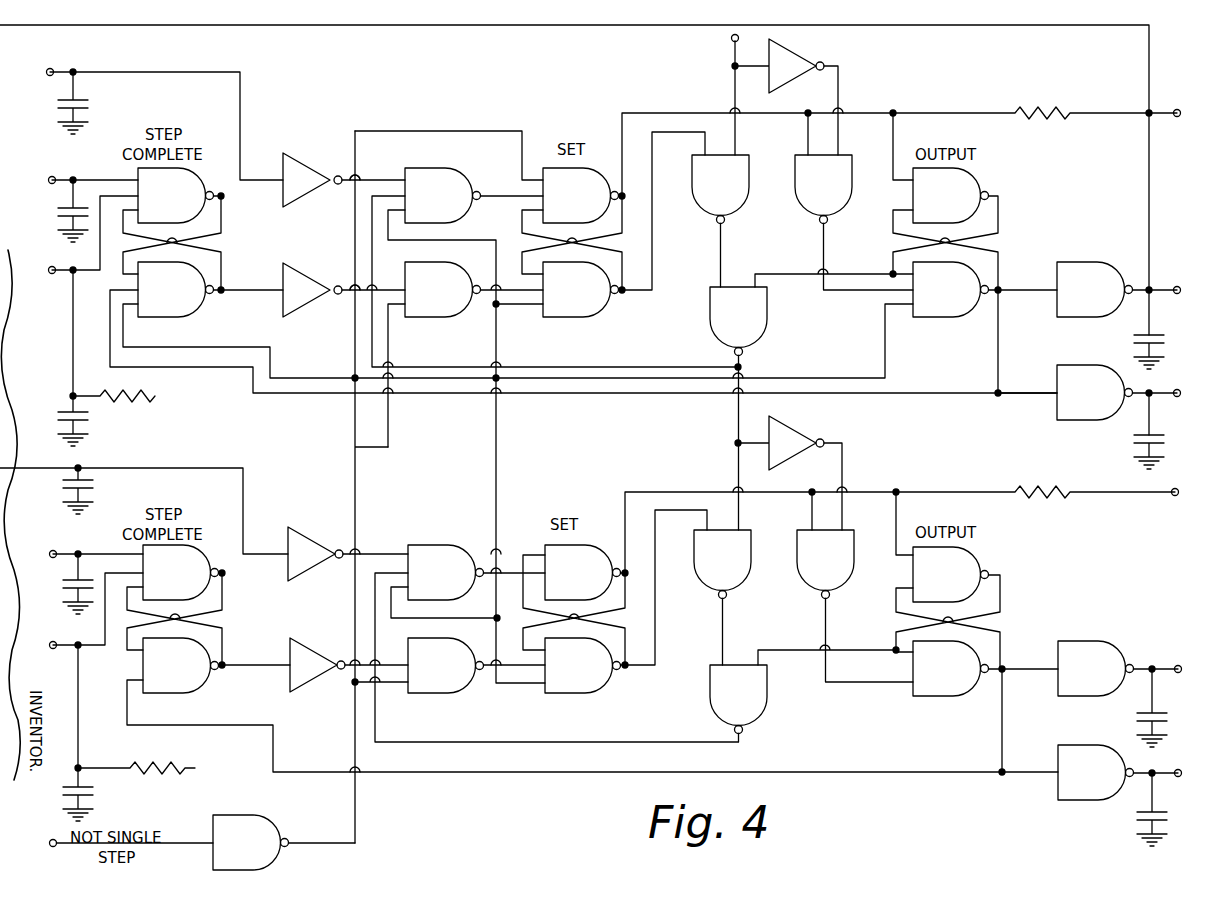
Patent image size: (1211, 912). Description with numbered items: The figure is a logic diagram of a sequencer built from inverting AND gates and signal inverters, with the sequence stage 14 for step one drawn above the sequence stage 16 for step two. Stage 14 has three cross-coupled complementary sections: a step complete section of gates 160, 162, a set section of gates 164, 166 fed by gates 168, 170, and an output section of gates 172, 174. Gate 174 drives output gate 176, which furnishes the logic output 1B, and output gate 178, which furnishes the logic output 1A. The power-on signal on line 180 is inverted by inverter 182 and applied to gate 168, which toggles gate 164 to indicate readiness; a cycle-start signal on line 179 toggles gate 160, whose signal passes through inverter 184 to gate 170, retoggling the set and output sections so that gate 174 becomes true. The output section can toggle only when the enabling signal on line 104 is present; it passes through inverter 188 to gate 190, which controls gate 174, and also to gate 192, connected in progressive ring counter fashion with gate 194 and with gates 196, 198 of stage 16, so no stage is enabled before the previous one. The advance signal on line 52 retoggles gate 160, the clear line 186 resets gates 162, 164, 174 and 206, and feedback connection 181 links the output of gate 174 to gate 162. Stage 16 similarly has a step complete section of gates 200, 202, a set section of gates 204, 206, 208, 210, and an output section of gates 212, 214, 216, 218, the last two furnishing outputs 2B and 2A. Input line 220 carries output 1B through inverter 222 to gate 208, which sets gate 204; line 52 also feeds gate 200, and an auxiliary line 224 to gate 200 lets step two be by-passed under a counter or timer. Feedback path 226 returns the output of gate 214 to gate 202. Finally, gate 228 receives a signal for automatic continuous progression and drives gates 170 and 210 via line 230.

The sequence stage 14 is at (560, 95).
The sequence stage 16 is at (620, 478).
The line 52 is at (62, 271).
The line 104 is at (735, 76).
The gate 160 is at (152, 178).
The gate 162 is at (180, 316).
The gate 164 is at (551, 176).
The gate 166 is at (580, 316).
The gate 168 is at (436, 188).
The gate 170 is at (432, 316).
The gate 172 is at (965, 194).
The gate 174 is at (958, 305).
The output gate 176 is at (1093, 272).
The output gate 178 is at (1096, 410).
The line 179 is at (64, 181).
The line 180 is at (238, 72).
The feedback connection 181 is at (930, 395).
The inverter 182 is at (292, 164).
The inverter 184 is at (298, 300).
The clear line 186 is at (497, 432).
The inverter 188 is at (790, 64).
The gate 190 is at (813, 214).
The gate 192 is at (714, 214).
The gate 194 is at (760, 322).
The gate 196 is at (731, 580).
The gate 198 is at (752, 704).
The gate 200 is at (185, 562).
The gate 202 is at (178, 692).
The gate 204 is at (550, 552).
The gate 206 is at (576, 686).
The gate 208 is at (445, 556).
The gate 210 is at (446, 690).
The gate 212 is at (922, 573).
The gate 214 is at (953, 686).
The gate 216 is at (1090, 652).
The gate 218 is at (1091, 786).
The input line 220 is at (174, 468).
The inverter 222 is at (292, 548).
The line 224 is at (78, 553).
The feedback path 226 is at (965, 775).
The gate 228 is at (256, 860).
The line 230 is at (387, 412).
The logic output 1A is at (1162, 378).
The logic output 1B is at (1161, 272).
The output 2A is at (1164, 789).
The output 2B is at (1164, 653).